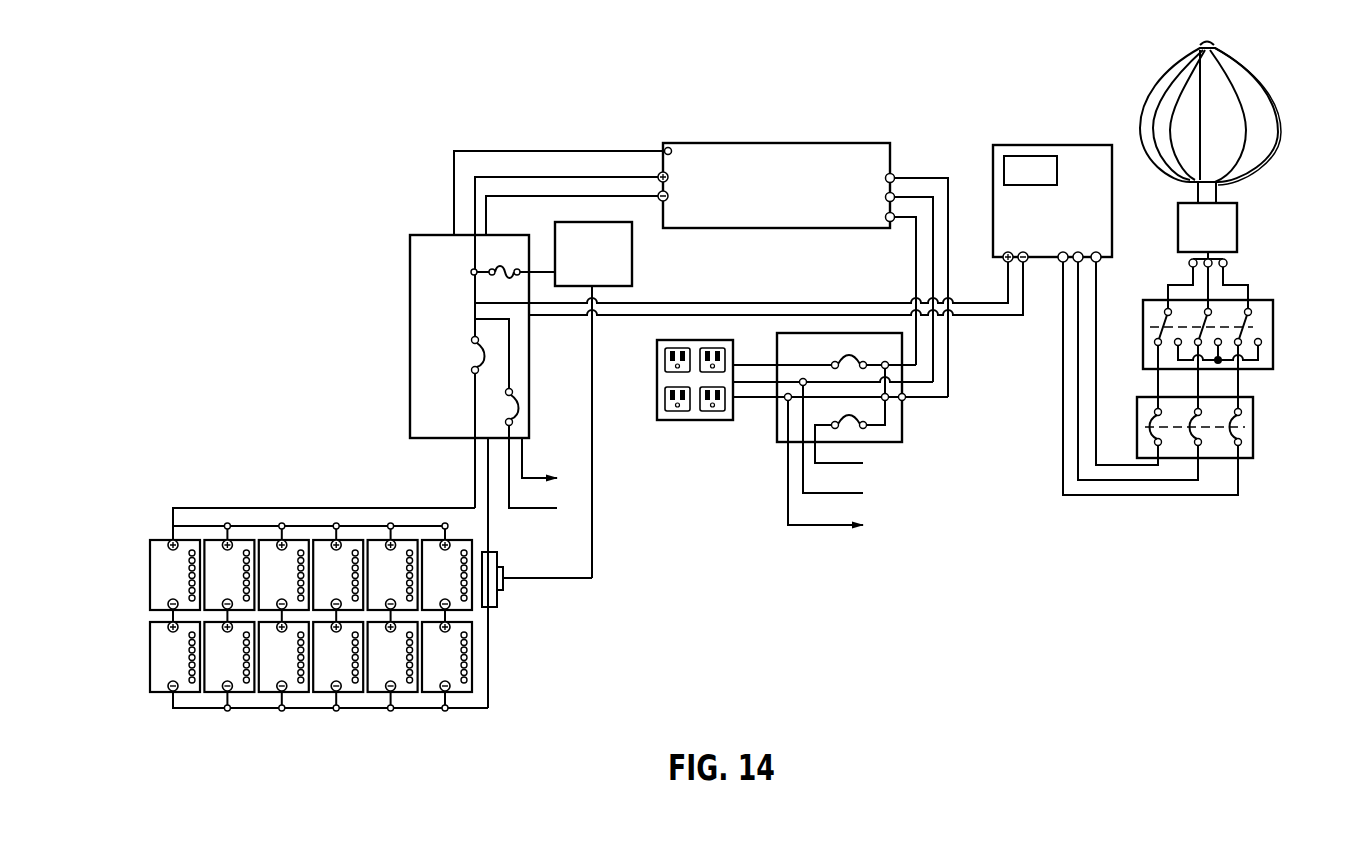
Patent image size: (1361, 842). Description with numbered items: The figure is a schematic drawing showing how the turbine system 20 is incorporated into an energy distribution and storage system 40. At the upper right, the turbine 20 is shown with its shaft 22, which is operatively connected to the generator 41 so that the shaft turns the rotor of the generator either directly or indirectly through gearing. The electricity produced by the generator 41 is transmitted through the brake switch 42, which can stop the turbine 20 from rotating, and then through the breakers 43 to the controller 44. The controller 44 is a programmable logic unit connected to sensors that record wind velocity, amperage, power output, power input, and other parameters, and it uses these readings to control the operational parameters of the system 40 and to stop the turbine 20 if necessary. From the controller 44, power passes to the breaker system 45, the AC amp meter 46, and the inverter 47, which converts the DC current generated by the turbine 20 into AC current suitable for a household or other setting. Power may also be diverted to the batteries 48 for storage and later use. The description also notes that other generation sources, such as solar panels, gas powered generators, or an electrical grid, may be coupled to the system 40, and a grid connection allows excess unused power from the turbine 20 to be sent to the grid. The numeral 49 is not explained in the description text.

The turbine system 20 is at (1250, 85).
The shaft 22 is at (1213, 188).
The energy distribution and storage system 40 is at (940, 625).
The generator 41 is at (1218, 225).
The brake switch 42 is at (1263, 317).
The breakers 43 is at (1248, 443).
The controller 44 is at (1115, 290).
The breaker system 45 is at (410, 300).
The AC amp meter 46 is at (632, 248).
The inverter 47 is at (742, 143).
The batteries 48 is at (903, 420).
The battery bank 49 is at (448, 660).